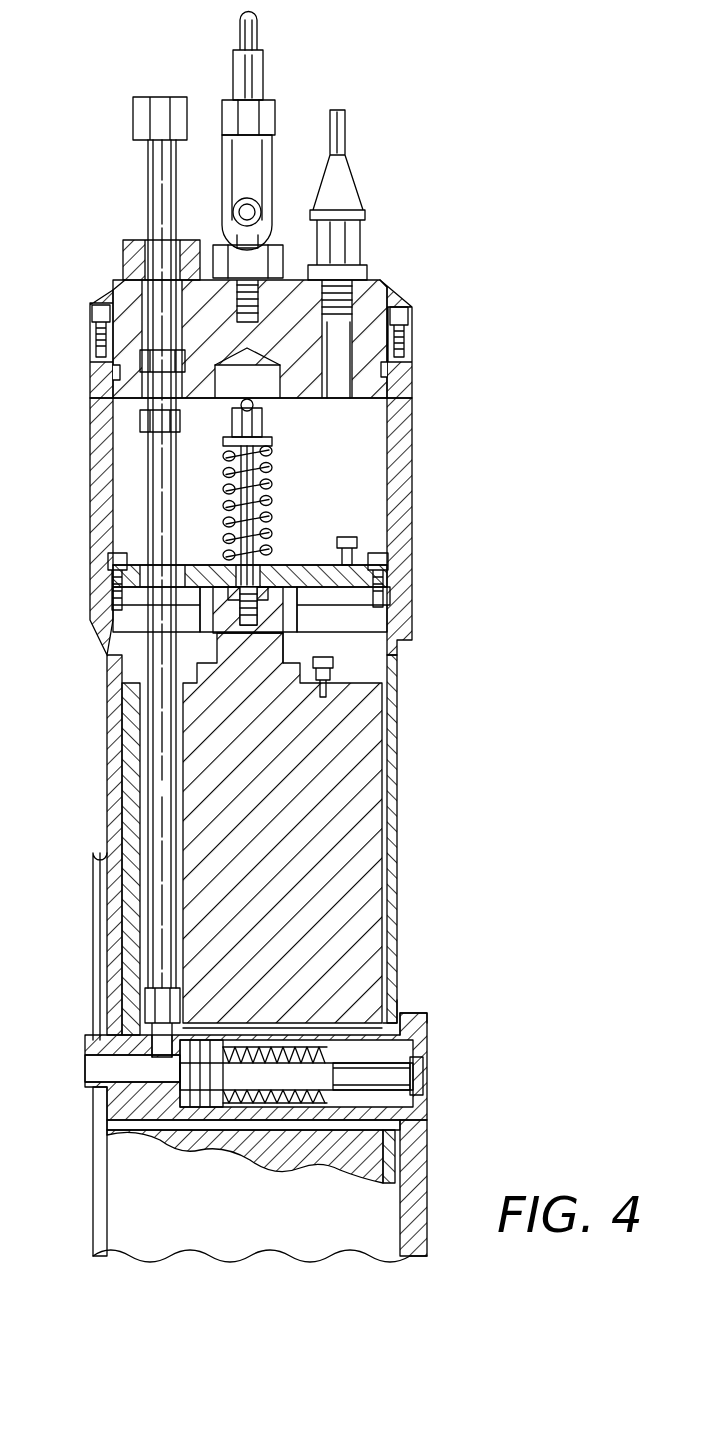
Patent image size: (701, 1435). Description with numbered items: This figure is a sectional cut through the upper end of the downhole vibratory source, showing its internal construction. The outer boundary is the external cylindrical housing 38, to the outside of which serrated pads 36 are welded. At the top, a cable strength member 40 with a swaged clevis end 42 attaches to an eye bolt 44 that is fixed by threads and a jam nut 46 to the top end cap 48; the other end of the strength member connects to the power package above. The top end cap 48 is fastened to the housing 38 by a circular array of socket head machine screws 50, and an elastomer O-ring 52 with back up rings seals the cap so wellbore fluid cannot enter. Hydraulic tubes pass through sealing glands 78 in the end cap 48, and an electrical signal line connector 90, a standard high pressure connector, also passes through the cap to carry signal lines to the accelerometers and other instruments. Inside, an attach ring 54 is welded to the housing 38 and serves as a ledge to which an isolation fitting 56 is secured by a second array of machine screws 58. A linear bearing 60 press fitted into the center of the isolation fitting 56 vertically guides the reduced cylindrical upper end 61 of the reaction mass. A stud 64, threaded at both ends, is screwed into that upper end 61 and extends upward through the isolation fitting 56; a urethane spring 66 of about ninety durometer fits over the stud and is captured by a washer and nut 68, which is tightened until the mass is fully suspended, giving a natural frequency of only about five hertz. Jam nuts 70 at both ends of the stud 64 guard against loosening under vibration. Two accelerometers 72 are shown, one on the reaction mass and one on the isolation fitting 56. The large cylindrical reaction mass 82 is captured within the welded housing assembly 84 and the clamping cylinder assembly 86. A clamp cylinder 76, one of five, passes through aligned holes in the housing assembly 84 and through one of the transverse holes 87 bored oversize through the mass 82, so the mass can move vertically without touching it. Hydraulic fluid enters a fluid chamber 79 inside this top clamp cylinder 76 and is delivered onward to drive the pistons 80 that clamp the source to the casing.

The serrated pads 36 is at (428, 1046).
The external cylindrical housing 38 is at (400, 806).
The cable strength member 40 is at (255, 35).
The clevis end 42 is at (243, 173).
The eye bolt 44 is at (250, 213).
The jam nut 46 is at (248, 257).
The top end cap 48 is at (372, 292).
The socket head machine screws 50 is at (104, 305).
The elastomer O-ring 52 is at (390, 366).
The attach ring 54 is at (394, 594).
The isolation fitting 56 is at (293, 576).
The machine screws 58 is at (112, 548).
The linear bearing 60 is at (200, 628).
The reduced cylindrical upper end 61 is at (289, 650).
The stud 64 is at (252, 528).
The urethane spring 66 is at (268, 505).
The washer and nut 68 is at (263, 430).
The jam nuts 70 is at (235, 416).
The accelerometers 72 is at (348, 536).
The clamp cylinders 76 is at (213, 1122).
The sealing glands 78 is at (117, 375).
The fluid chamber 79 is at (140, 1078).
The pistons 80 is at (180, 1105).
The cylindrical reaction mass 82 is at (312, 873).
The welded housing assembly 84 is at (410, 1018).
The clamping cylinder assembly 86 is at (346, 1182).
The transverse holes 87 is at (395, 990).
The electrical signal line connector 90 is at (345, 187).